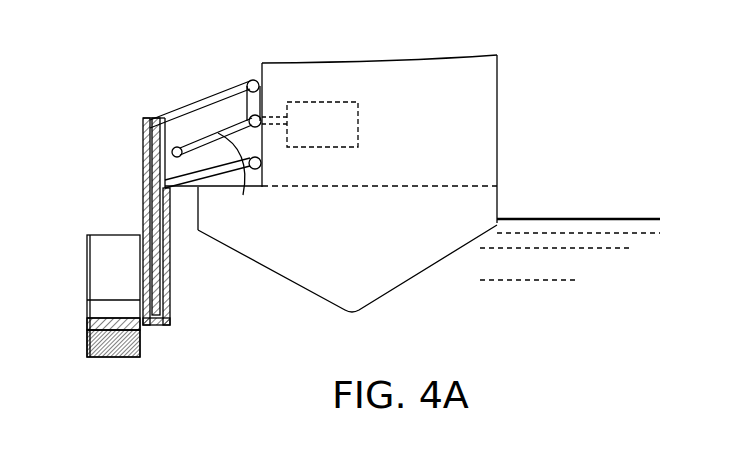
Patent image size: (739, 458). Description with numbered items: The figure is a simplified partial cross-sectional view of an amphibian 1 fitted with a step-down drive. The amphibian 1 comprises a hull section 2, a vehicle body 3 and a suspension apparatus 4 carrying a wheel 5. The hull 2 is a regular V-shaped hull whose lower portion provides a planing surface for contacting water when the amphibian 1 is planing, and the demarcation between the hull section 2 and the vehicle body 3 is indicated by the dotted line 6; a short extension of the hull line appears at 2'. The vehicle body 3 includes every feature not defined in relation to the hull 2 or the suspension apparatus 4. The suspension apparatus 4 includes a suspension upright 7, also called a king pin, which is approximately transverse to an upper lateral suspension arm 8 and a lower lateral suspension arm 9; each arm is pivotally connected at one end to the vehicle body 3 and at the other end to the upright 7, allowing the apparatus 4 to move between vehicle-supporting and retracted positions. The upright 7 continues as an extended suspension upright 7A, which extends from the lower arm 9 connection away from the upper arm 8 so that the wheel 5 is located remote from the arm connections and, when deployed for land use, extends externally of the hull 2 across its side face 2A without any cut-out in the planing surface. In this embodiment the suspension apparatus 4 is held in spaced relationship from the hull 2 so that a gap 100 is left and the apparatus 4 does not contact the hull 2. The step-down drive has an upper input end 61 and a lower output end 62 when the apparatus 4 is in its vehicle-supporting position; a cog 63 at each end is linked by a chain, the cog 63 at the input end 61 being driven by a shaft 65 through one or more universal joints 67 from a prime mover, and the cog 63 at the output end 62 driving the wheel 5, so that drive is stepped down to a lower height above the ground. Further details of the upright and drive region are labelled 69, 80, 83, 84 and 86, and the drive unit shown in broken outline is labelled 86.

The amphibian 1 is at (398, 300).
The hull section 2 is at (453, 265).
The bottom wall extension 2' is at (670, 219).
The side face of the planing surface 2A is at (193, 240).
The vehicle body 3 is at (495, 57).
The suspension apparatus 4 is at (103, 128).
The wheel 5 is at (90, 357).
The dotted line 6 is at (500, 180).
The suspension upright 7 is at (140, 128).
The extended suspension upright 7A is at (170, 320).
The upper lateral suspension arm 8 is at (198, 98).
The lower lateral suspension arm 9 is at (217, 187).
The upper input end 61 is at (140, 175).
The lower output end 62 is at (135, 259).
The cog 63 is at (150, 310).
The shaft 65 is at (250, 175).
The universal joint 67 is at (250, 93).
The post cap 69 is at (140, 125).
The channel 80 is at (140, 203).
The bracket 83 is at (140, 150).
The fitting 84 is at (140, 222).
The control unit 86 is at (360, 125).
The gap 100 is at (180, 225).